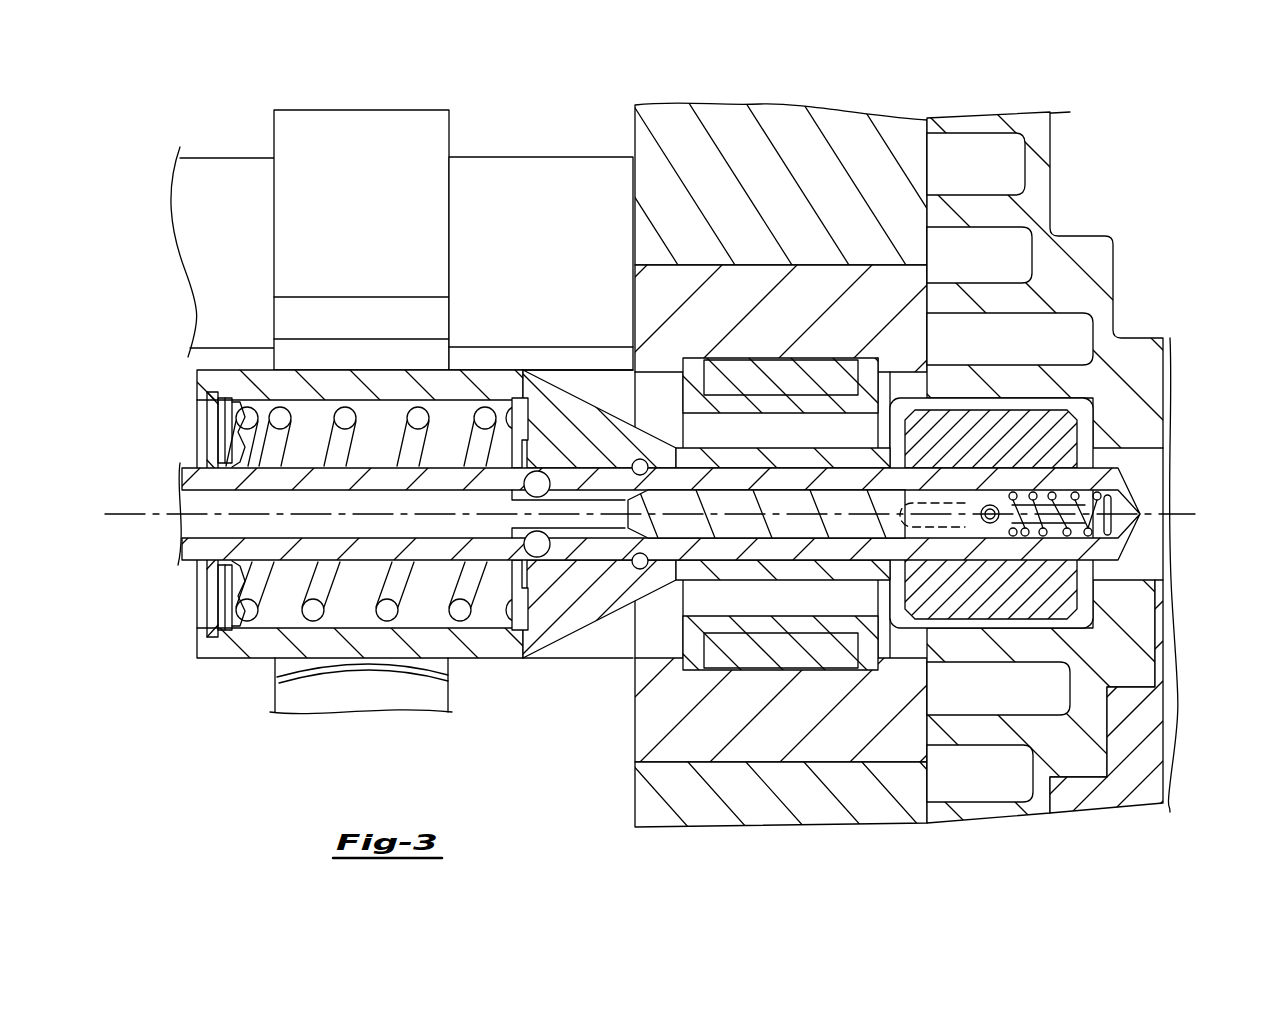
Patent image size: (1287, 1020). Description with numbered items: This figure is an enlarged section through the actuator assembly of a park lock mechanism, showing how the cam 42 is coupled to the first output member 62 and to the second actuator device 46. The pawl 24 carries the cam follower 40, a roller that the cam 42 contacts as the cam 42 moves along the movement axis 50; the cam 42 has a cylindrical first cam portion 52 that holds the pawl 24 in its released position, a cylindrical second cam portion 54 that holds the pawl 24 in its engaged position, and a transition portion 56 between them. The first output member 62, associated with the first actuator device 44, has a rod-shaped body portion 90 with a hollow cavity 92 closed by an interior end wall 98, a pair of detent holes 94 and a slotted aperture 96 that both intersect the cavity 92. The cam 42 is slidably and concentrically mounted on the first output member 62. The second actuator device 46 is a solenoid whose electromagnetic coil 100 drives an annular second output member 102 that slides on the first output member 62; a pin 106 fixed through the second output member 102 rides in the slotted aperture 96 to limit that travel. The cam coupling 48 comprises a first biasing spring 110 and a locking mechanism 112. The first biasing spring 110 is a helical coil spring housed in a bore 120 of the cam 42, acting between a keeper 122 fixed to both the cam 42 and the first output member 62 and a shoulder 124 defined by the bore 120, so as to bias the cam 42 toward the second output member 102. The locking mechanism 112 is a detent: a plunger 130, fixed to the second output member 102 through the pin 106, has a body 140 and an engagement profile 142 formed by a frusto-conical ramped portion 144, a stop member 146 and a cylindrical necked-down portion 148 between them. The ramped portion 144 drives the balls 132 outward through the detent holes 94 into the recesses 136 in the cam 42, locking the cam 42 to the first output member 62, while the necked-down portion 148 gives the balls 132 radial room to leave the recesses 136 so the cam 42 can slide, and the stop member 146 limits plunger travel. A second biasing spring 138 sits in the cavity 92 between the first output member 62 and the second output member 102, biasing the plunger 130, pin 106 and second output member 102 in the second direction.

The pawl 24 is at (352, 688).
The cam follower 40 is at (280, 678).
The cam 42 is at (495, 380).
The first actuator device 44 is at (1140, 673).
The second actuator device 46 is at (790, 367).
The cam coupling 48 is at (578, 568).
The movement axis 50 is at (1180, 517).
The first cam portion 52 is at (737, 450).
The second cam portion 54 is at (325, 380).
The transition portion 56 is at (540, 632).
The first output member 62 is at (1110, 480).
The body portion 90 is at (805, 547).
The cavity 92 is at (215, 528).
The detent holes 94 is at (517, 473).
The slotted aperture 96 is at (940, 540).
The interior end wall 98 is at (1133, 500).
The electromagnetic coil 100 is at (777, 367).
The second output member 102 is at (1040, 420).
The pin 106 is at (995, 522).
The first biasing spring 110 is at (310, 662).
The locking mechanism 112 is at (1196, 48).
The bore 120 is at (215, 605).
The keeper 122 is at (210, 395).
The shoulder 124 is at (540, 478).
The plunger 130 is at (875, 500).
The balls 132 is at (541, 470).
The recesses 136 is at (640, 460).
The second biasing spring 138 is at (1090, 527).
The body 140 is at (840, 517).
The engagement profile 142 is at (632, 778).
The ramped portion 144 is at (602, 517).
The stop member 146 is at (480, 527).
The necked-down portion 148 is at (613, 540).